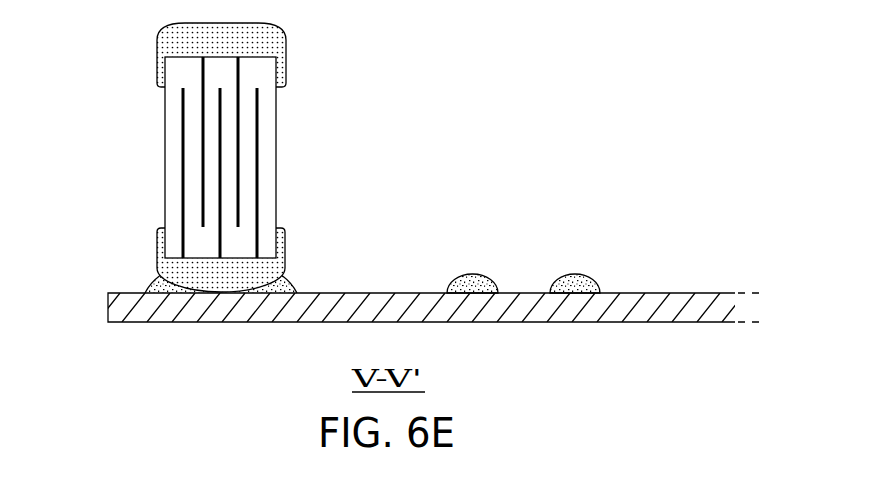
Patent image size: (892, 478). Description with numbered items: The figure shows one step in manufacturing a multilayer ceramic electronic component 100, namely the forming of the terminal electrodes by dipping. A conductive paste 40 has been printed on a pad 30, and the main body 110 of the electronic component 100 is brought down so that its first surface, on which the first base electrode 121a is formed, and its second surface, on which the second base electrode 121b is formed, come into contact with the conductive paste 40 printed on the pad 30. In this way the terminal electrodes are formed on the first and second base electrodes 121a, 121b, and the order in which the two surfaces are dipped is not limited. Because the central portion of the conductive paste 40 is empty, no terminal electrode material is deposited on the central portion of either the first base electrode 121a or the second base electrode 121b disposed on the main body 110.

The electronic component (multilayer ceramic capacitor) 100 is at (219, 147).
The second base electrode 121b is at (284, 42).
The main body 110 is at (277, 159).
The first base electrode 121a is at (284, 271).
The conductive paste 40 is at (157, 279).
The pad 30 is at (118, 307).